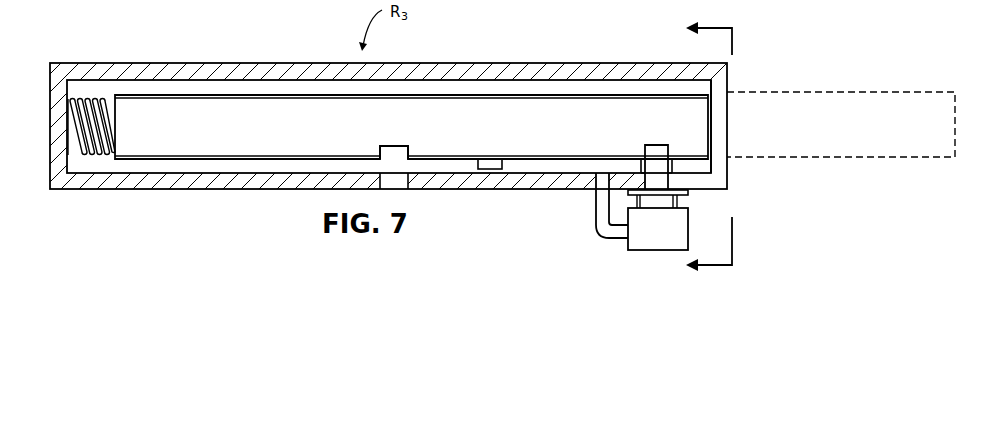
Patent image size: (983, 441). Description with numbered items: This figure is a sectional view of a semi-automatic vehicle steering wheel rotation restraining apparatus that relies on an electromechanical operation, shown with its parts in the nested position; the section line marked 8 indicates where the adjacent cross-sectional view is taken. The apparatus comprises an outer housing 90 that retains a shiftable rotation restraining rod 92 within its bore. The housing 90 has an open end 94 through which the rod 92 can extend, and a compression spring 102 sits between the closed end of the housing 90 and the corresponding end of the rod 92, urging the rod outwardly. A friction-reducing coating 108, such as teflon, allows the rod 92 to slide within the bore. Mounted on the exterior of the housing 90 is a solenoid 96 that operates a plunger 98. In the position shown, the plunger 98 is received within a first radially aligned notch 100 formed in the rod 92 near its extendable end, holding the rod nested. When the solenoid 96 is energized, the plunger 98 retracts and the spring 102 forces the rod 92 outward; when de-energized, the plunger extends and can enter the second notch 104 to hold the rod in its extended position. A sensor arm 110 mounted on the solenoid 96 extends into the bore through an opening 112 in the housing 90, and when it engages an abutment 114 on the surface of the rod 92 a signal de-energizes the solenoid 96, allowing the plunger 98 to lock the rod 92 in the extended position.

The outer housing 90 is at (185, 63).
The rotation restraining rod 92 is at (247, 95).
The open end 94 is at (729, 68).
The solenoid 96 is at (688, 232).
The plunger 98 is at (672, 163).
The first radially aligned notch 100 is at (643, 152).
The compression spring 102 is at (100, 97).
The second notch 104 is at (390, 145).
The friction-reducing coating 108 is at (168, 159).
The sensor arm 110 is at (602, 228).
The opening 112 is at (590, 178).
The abutment 114 is at (490, 163).
The section line 8- 8 is at (717, 150).